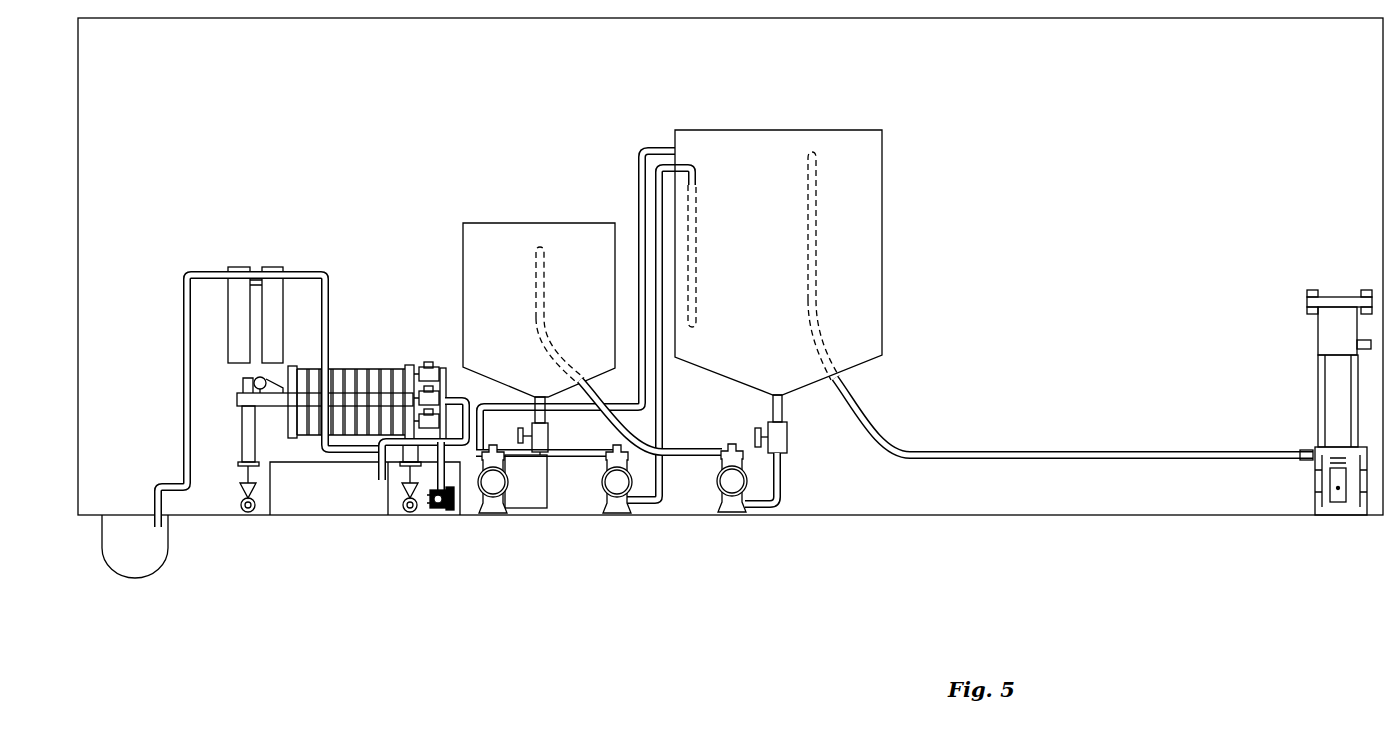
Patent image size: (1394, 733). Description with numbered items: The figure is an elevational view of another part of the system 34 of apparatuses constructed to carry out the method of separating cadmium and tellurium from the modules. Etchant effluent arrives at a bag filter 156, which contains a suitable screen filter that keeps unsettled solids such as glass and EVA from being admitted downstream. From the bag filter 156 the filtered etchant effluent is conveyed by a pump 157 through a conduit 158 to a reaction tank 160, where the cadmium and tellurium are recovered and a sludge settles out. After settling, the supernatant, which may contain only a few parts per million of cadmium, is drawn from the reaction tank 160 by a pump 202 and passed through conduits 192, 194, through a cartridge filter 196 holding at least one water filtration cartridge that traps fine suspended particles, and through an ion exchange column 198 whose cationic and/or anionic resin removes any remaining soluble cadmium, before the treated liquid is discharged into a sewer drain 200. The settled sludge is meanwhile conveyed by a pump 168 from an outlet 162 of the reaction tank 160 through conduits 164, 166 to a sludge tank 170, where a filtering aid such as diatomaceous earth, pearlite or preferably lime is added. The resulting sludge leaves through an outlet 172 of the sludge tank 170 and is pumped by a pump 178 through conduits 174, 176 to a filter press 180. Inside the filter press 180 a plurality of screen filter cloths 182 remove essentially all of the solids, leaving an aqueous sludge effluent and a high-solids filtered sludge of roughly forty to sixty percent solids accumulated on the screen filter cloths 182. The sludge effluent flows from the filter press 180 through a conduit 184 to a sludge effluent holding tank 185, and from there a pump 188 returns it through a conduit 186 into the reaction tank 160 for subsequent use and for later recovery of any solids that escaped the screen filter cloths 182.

The system 34 is at (1060, 165).
The bag filter 156 is at (1336, 285).
The pump 157 is at (1340, 515).
The conduit 158 is at (1000, 450).
The reaction tank 160 is at (850, 120).
The outlet 162 is at (777, 393).
The conduit 164 is at (782, 473).
The conduit 166 is at (690, 443).
The pump 168 is at (732, 510).
The sludge tank 170 is at (522, 215).
The outlet 172 is at (537, 396).
The conduit 174 is at (537, 510).
The conduit 176 is at (465, 396).
The pump 178 is at (494, 510).
The filter press 180 is at (352, 362).
The screen filter cloths 182 is at (377, 425).
The conduit 184 is at (399, 512).
The sludge effluent holding tank 185 is at (357, 505).
The conduit 186 is at (430, 515).
The pump 188 is at (440, 515).
The conduit 192 is at (662, 373).
The conduit 194 is at (316, 272).
The cartridge filter 196 is at (276, 267).
The ion exchange column 198 is at (236, 267).
The sewer drain 200 is at (142, 545).
The pump 202 is at (632, 510).